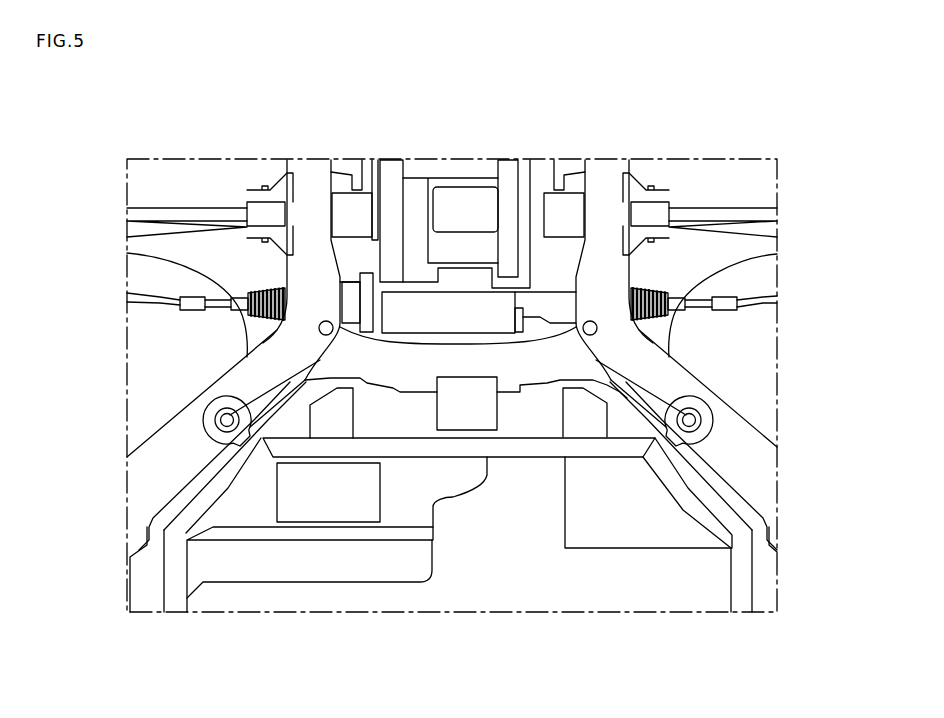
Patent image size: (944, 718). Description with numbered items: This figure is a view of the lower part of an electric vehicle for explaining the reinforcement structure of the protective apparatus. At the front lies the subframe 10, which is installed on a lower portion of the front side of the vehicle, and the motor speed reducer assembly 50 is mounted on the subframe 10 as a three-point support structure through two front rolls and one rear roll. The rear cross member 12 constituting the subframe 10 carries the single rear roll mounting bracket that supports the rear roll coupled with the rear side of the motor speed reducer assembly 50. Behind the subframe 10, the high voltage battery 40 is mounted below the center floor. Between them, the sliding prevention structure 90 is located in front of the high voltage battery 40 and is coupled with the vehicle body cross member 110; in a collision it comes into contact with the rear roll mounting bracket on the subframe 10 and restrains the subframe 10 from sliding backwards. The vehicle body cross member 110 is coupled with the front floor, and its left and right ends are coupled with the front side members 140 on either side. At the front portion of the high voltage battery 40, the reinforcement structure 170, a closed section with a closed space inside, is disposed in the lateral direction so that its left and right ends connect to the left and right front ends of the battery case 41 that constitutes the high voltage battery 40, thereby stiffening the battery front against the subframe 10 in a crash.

The subframe 10 is at (606, 178).
The rear cross member 12 is at (400, 360).
The motor speed reducer assembly 50 is at (466, 210).
The sliding prevention structure 90 is at (467, 410).
The reinforcement structure 170 is at (390, 447).
The vehicle body cross member 110 is at (534, 420).
The high voltage battery 40 is at (624, 587).
The front side member 140 is at (165, 467).
The battery case 41 is at (173, 572).